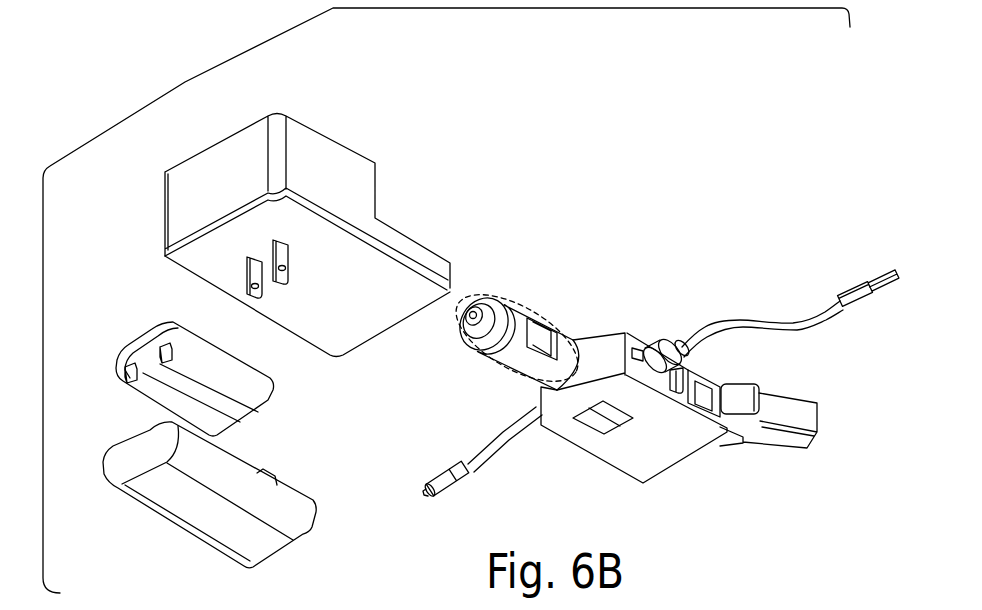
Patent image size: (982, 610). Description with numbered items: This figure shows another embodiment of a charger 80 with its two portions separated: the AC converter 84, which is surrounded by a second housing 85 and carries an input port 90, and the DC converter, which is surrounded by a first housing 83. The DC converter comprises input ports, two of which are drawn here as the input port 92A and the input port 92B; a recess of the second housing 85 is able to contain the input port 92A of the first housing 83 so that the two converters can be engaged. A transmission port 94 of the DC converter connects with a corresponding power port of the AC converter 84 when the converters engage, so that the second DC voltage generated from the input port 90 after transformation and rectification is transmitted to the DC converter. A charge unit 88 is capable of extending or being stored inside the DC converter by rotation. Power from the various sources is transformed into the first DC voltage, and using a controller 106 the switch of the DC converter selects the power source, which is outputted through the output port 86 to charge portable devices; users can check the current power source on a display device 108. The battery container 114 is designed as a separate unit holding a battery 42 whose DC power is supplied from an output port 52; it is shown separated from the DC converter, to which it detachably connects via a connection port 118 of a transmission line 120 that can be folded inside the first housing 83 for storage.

The charger 80 is at (199, 79).
The AC converter 84 is at (327, 118).
The second housing 85 is at (358, 340).
The input port 90 is at (247, 295).
The battery 42 is at (260, 397).
The output port 52 is at (160, 351).
The battery container 114 is at (190, 503).
The input port 92A is at (530, 300).
The first housing 83 is at (667, 457).
The transmission port 94 is at (602, 432).
The controller 106 is at (645, 338).
The display device 108 is at (682, 370).
The input port 92B is at (778, 445).
The charge unit 88 is at (821, 443).
The output port 86 is at (870, 281).
The transmission line 120 is at (487, 455).
The connection port 118 is at (430, 496).